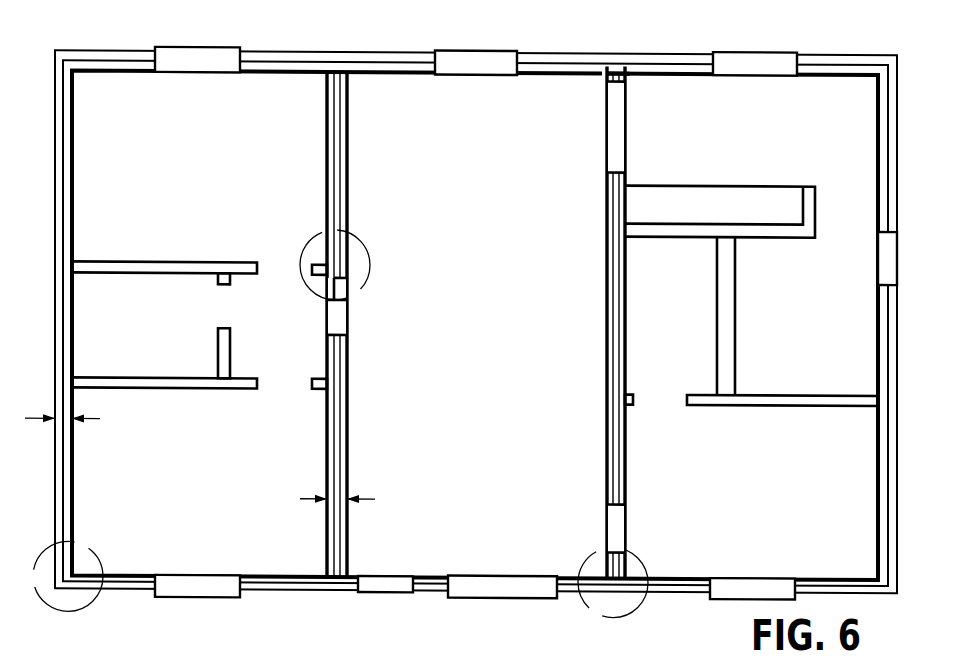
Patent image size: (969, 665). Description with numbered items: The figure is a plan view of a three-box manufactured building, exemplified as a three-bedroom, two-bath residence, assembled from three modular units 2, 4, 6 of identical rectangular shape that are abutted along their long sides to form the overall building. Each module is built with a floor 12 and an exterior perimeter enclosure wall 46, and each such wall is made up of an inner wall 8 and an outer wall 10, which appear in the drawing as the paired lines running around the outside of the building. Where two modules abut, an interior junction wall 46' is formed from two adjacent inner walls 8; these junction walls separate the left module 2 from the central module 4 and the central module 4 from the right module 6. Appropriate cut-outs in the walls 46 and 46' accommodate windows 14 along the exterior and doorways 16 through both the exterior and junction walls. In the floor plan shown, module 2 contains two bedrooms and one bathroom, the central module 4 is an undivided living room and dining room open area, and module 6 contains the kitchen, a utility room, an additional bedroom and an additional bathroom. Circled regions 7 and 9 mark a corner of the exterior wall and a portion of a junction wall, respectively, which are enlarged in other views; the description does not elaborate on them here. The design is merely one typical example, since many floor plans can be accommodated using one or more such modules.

The modular unit 2 is at (286, 52).
The modular unit 4 is at (592, 55).
The modular unit 6 is at (823, 57).
The corner detail 7 is at (97, 600).
The inner wall 8 is at (73, 147).
The partition wall detail 9 is at (370, 262).
The outer wall 10 is at (55, 152).
The floor 12 is at (275, 446).
The window 14 is at (193, 52).
The doorway 16 is at (344, 318).
The exterior perimeter enclosure wall 46 is at (81, 420).
The interior junction wall 46' is at (355, 501).